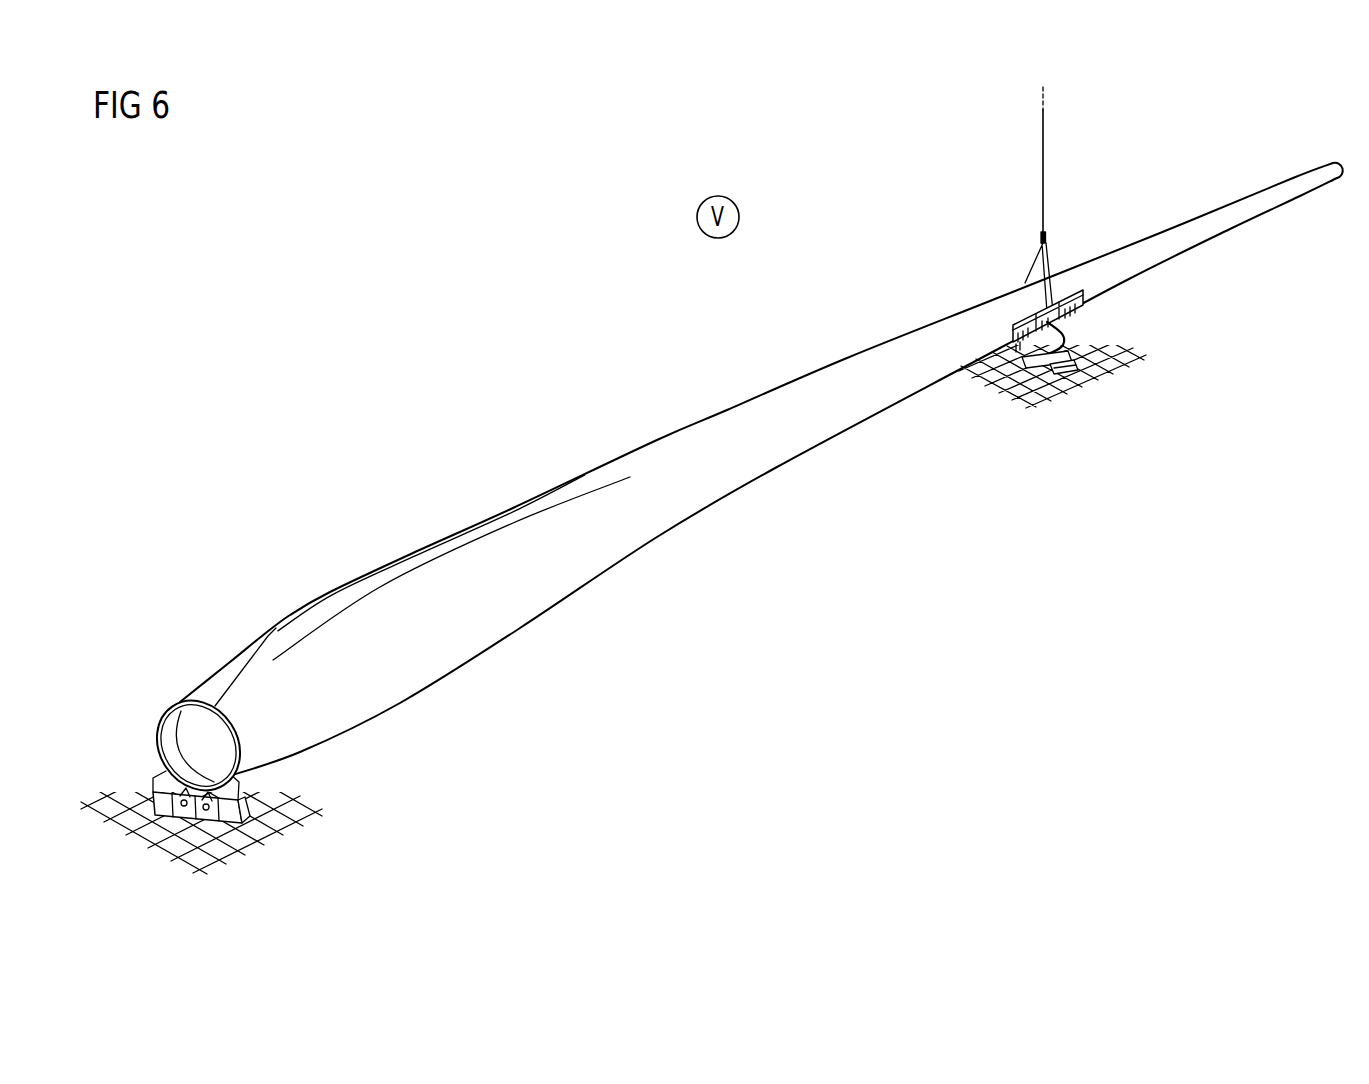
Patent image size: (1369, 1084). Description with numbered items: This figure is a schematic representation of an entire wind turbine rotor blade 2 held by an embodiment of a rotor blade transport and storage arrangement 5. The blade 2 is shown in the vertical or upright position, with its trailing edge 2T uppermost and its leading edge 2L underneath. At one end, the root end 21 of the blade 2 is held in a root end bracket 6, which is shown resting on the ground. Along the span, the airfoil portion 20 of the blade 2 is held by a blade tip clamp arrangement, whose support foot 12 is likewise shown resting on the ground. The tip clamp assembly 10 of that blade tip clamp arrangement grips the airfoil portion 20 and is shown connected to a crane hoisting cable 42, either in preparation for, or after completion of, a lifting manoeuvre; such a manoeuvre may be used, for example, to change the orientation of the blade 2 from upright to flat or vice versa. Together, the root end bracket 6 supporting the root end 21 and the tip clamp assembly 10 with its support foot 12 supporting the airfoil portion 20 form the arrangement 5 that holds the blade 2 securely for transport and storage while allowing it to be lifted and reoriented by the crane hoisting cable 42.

The blade 2 is at (447, 513).
The trailing edge 2T is at (847, 358).
The leading edge 2L is at (777, 467).
The airfoil portion 20 is at (723, 423).
The root end 21 is at (216, 690).
The root end bracket 6 is at (152, 800).
The tip clamp assembly 10 is at (1082, 310).
The support foot 12 is at (1048, 372).
The lifting cable 42 is at (1046, 177).
The rotor blade transport and storage arrangement 5 is at (1072, 514).